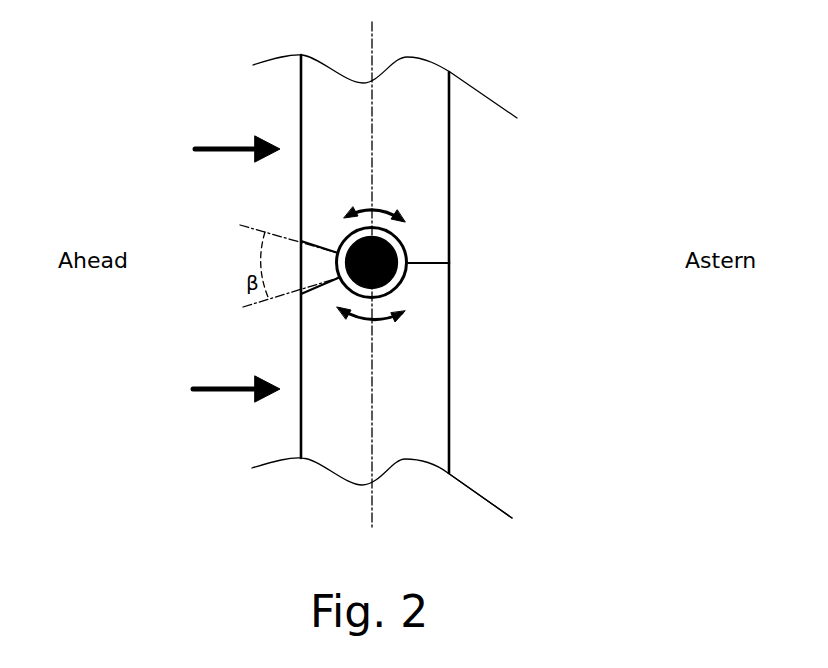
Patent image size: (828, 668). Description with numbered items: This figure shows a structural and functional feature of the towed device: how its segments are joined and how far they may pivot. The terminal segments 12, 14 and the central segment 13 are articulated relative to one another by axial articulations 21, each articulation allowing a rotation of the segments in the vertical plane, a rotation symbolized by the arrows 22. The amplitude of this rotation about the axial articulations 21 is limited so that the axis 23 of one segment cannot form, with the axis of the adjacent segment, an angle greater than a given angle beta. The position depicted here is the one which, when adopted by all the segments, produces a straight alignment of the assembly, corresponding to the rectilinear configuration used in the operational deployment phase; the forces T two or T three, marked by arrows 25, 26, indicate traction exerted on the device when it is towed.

The terminal segment 12 is at (415, 172).
The central segment 13 is at (438, 357).
The terminal segment 14 is at (480, 495).
The axial articulation 21 is at (407, 248).
The arrows 22 is at (368, 212).
The axis 23 is at (373, 43).
The thrust arrow T2 or T3 25 is at (205, 152).
The thrust arrow T2 or T3 26 is at (225, 391).